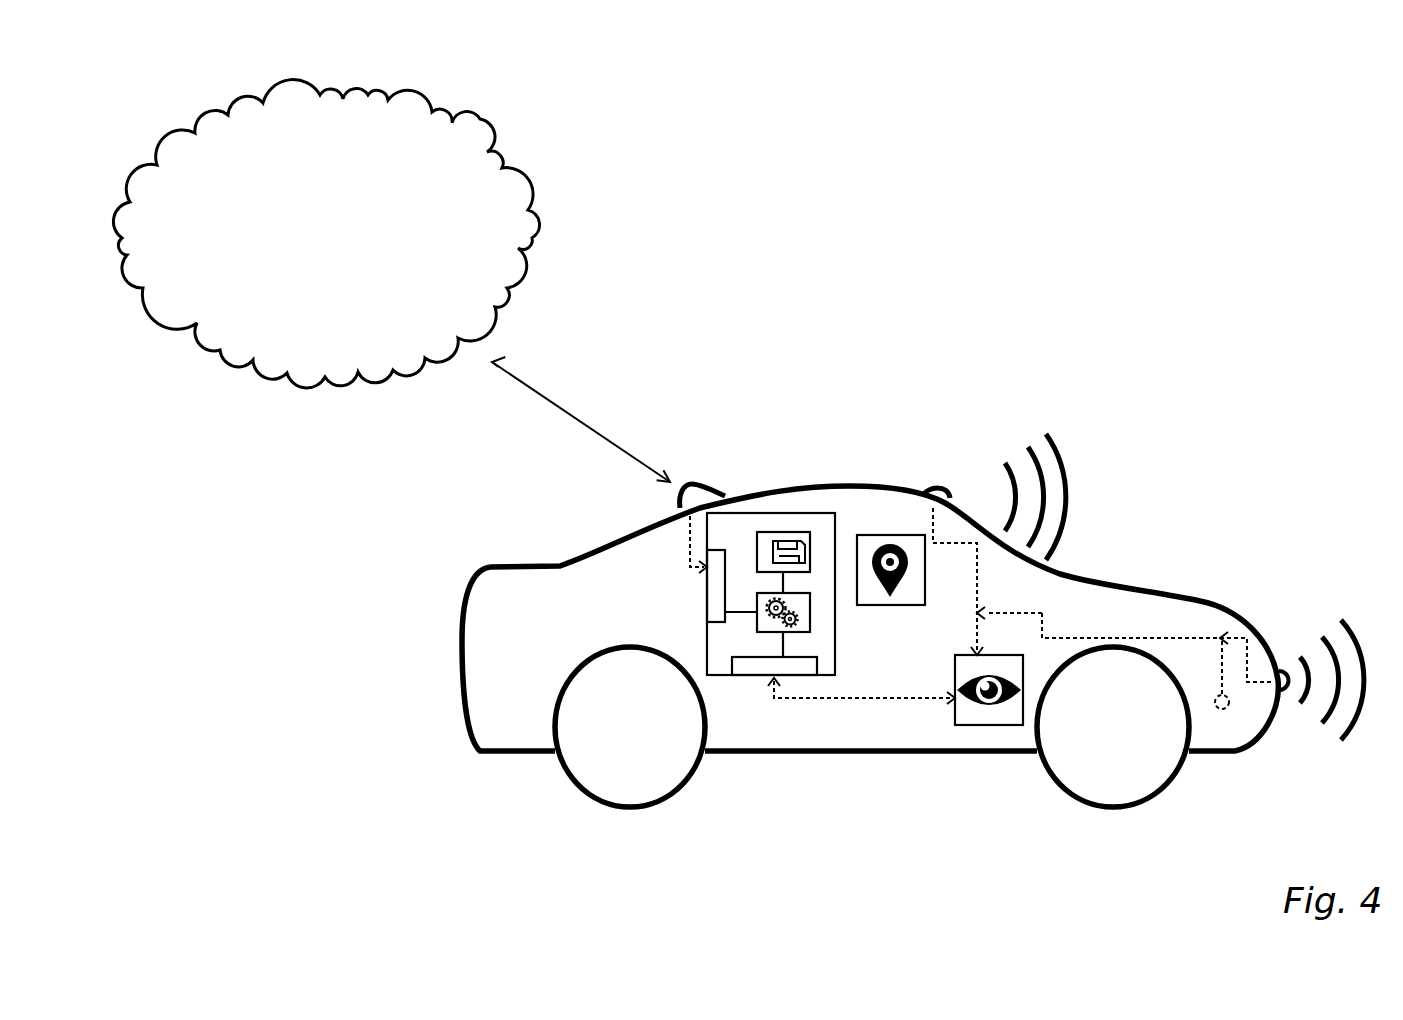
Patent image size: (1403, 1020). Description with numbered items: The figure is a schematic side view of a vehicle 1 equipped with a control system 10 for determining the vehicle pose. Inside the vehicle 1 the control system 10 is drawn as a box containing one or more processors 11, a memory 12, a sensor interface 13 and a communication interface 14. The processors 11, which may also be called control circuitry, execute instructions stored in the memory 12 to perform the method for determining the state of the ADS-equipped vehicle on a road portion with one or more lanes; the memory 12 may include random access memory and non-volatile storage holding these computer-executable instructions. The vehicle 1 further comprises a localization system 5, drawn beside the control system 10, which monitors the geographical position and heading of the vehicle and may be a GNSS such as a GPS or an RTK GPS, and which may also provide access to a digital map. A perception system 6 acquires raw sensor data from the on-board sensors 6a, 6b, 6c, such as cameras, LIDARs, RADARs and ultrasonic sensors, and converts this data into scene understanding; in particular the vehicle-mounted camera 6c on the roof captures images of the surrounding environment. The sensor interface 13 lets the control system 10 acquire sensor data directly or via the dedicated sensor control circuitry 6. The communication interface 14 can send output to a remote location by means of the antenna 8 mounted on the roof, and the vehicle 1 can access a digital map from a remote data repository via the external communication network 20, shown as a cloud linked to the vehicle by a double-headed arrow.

The vehicle 1 is at (483, 745).
The localization system 5 is at (873, 535).
The perception system 6 is at (1003, 725).
The sensor 6a is at (1227, 712).
The sensor 6b is at (1284, 672).
The vehicle-mounted camera 6c is at (937, 496).
The antenna 8 is at (700, 482).
The control system 10 is at (763, 562).
The processor 11 is at (811, 618).
The memory 12 is at (783, 532).
The sensor interface 13 is at (758, 668).
The communication interface 14 is at (712, 600).
The external communication network 20 is at (475, 113).